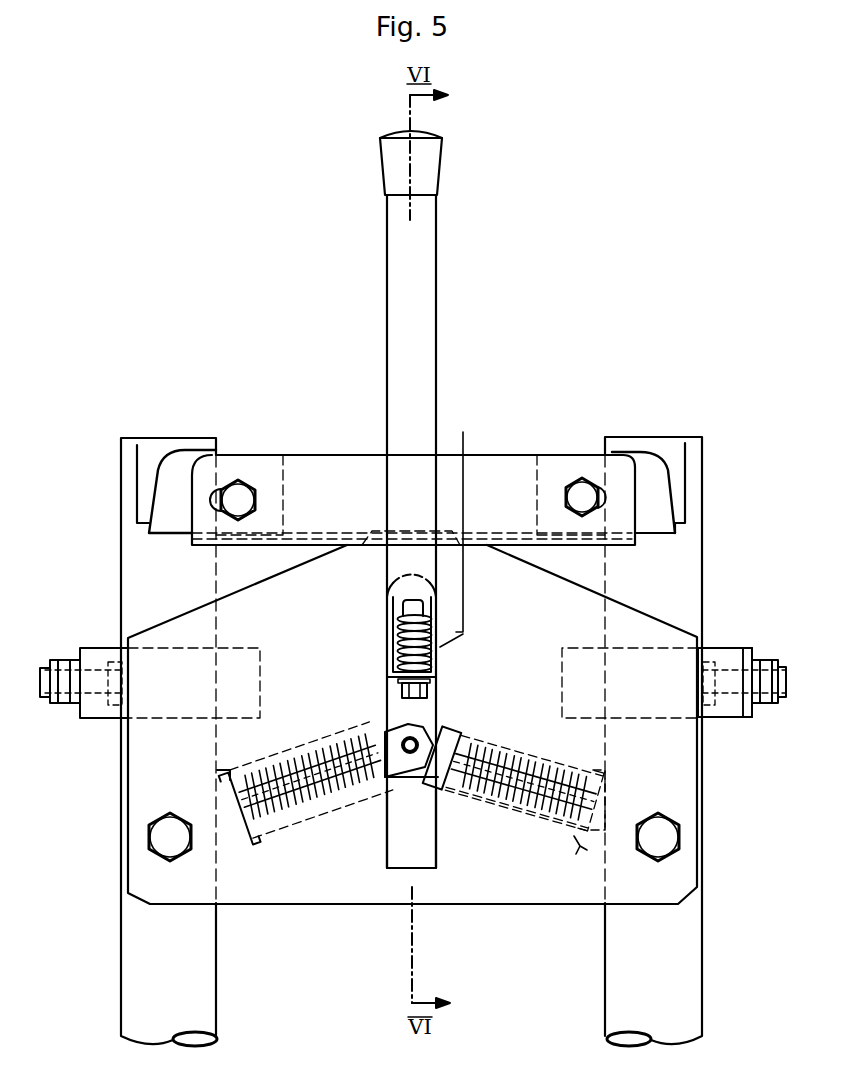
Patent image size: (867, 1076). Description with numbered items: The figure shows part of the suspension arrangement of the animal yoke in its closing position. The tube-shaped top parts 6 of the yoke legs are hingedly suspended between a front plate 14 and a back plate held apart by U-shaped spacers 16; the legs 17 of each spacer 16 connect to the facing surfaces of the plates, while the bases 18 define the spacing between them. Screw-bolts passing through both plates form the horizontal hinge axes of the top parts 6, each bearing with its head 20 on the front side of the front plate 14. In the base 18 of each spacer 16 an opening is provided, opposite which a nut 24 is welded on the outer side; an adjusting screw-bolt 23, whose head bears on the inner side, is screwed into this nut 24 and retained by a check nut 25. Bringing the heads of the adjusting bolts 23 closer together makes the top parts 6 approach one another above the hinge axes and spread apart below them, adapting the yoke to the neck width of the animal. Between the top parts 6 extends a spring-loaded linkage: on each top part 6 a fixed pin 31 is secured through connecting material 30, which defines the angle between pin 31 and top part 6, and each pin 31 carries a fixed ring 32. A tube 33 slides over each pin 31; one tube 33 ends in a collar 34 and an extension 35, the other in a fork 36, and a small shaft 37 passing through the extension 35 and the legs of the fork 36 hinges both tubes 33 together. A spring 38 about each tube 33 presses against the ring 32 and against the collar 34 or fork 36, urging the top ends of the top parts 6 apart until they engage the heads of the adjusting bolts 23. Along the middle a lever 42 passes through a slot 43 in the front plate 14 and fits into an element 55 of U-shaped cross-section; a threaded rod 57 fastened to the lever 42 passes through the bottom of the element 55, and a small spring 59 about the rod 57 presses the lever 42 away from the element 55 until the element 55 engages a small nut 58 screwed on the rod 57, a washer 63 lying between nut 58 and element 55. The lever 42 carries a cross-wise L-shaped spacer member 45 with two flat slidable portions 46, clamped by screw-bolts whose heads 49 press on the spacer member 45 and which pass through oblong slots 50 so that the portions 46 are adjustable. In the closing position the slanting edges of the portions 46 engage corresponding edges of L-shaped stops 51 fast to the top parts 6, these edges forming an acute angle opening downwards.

The top parts 6 is at (693, 560).
The front plate 14 is at (177, 628).
The spacers 16 is at (720, 634).
The legs 17 is at (108, 712).
The bases 18 is at (743, 657).
The head 20 is at (147, 837).
The screw-bolt 23 is at (782, 697).
The nut 24 is at (750, 718).
The check nut 25 is at (767, 703).
The material 30 is at (597, 850).
The fixed pin 31 is at (566, 795).
The fixed ring 32 is at (577, 845).
The tube 33 is at (503, 802).
The collar 34 is at (400, 862).
The extension 35 is at (390, 778).
The fork 36 is at (403, 757).
The small shaft 37 is at (347, 793).
The spring 38 is at (482, 805).
The lever 42 is at (427, 239).
The slot 43 is at (413, 774).
The spacer member 45 is at (488, 468).
The slidable portions 46 is at (162, 527).
The heads 49 is at (239, 492).
The oblong slots 50 is at (617, 497).
The stops 51 is at (648, 445).
The element 55 is at (455, 526).
The threaded rod 57 is at (417, 607).
The small nut 58 is at (402, 688).
The small spring 59 is at (400, 627).
The washer 63 is at (430, 681).